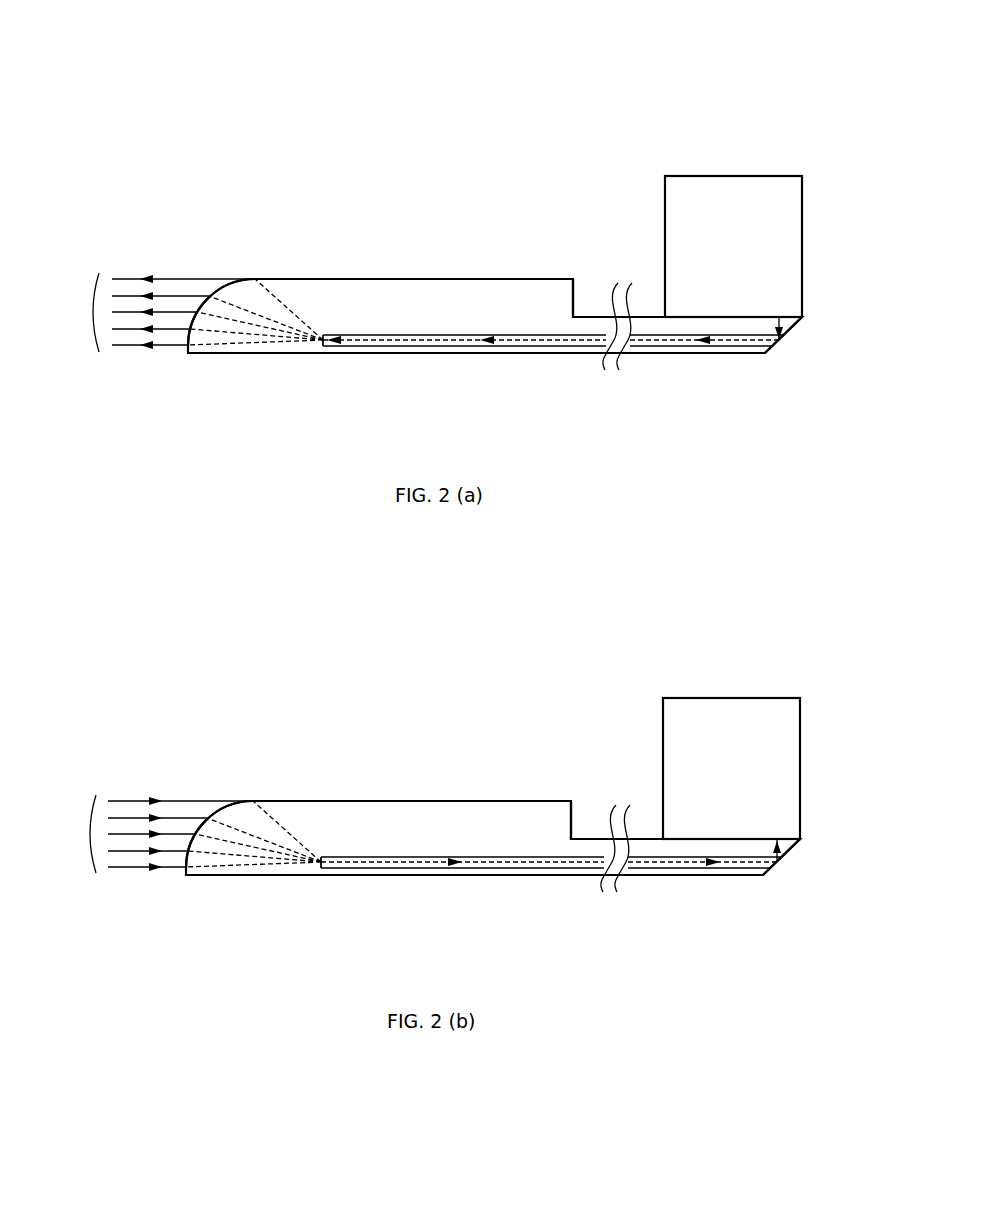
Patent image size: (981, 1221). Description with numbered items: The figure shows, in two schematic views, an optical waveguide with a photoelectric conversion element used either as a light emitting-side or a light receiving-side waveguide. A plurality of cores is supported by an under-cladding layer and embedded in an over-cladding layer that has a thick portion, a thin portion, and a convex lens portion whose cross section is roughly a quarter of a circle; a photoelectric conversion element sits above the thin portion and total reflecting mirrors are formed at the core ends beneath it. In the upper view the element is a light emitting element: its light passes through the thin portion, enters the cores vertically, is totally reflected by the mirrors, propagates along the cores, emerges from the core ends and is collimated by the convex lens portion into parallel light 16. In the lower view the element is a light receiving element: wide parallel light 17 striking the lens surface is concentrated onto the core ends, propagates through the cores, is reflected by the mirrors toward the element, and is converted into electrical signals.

The parallel light 16 is at (154, 312).
The wide parallel light 17 is at (151, 834).